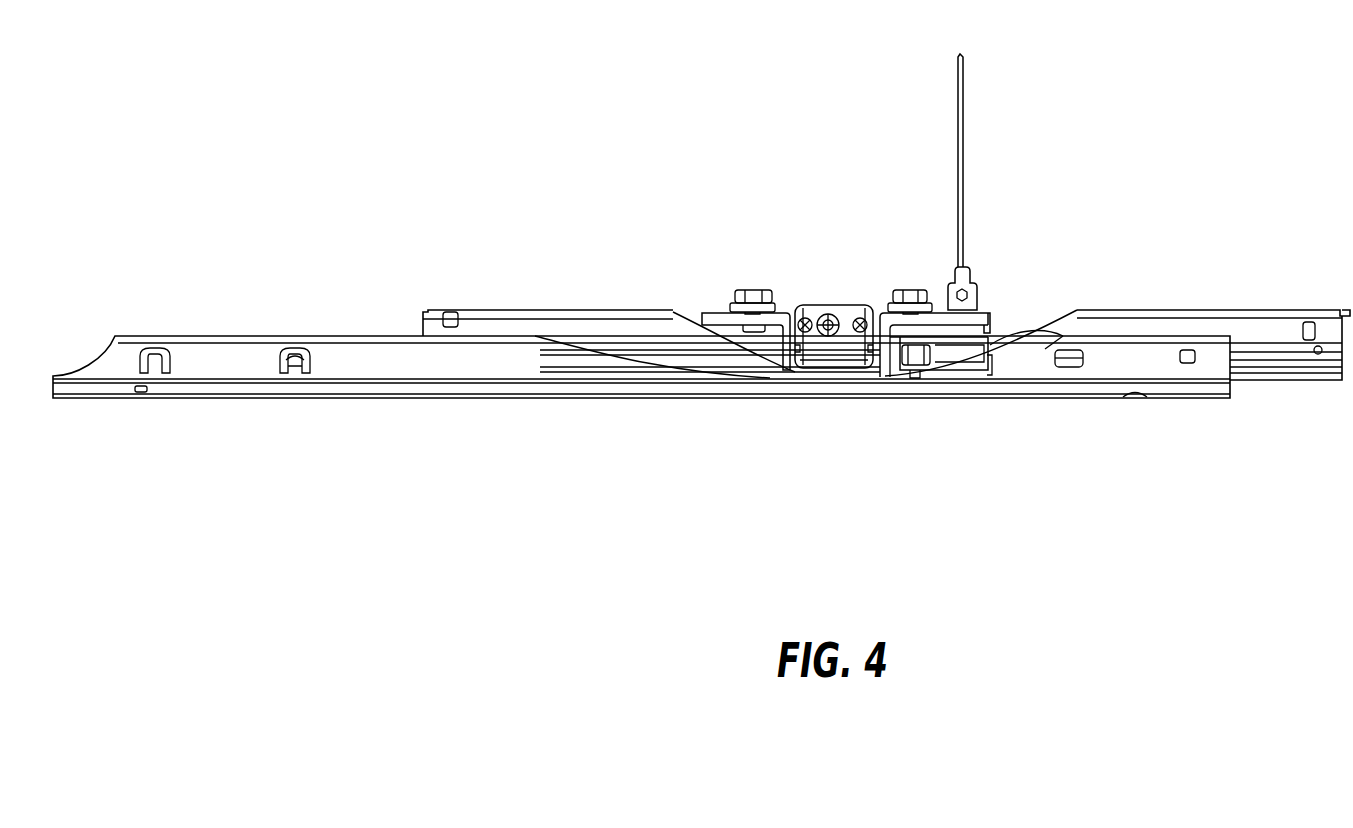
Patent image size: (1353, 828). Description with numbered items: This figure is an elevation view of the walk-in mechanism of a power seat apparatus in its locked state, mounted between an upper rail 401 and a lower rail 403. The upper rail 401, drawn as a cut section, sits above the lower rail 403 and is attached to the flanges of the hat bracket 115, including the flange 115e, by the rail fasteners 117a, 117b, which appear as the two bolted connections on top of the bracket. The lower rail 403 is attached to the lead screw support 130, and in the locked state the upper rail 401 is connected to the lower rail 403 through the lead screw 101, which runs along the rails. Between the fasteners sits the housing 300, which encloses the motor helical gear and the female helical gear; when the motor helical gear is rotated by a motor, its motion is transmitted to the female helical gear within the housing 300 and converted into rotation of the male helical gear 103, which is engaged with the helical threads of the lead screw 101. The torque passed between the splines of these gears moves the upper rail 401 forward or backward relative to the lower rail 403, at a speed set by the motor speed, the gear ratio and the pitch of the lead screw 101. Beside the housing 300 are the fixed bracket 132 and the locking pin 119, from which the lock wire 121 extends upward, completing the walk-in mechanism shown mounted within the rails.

The lead screw 101 is at (760, 352).
The male helical gear 103 is at (924, 366).
The hat bracket 115 is at (712, 288).
The flange of the hat bracket 115e is at (990, 310).
The rail fastener 117a is at (757, 290).
The rail fastener 117b is at (910, 290).
The locking pin 119 is at (976, 290).
The lock wire 121 is at (963, 138).
The lead screw support 130 is at (955, 362).
The fixed bracket 132 is at (1000, 328).
The housing 300 is at (834, 288).
The upper rail 401 is at (524, 308).
The lower rail 403 is at (345, 392).